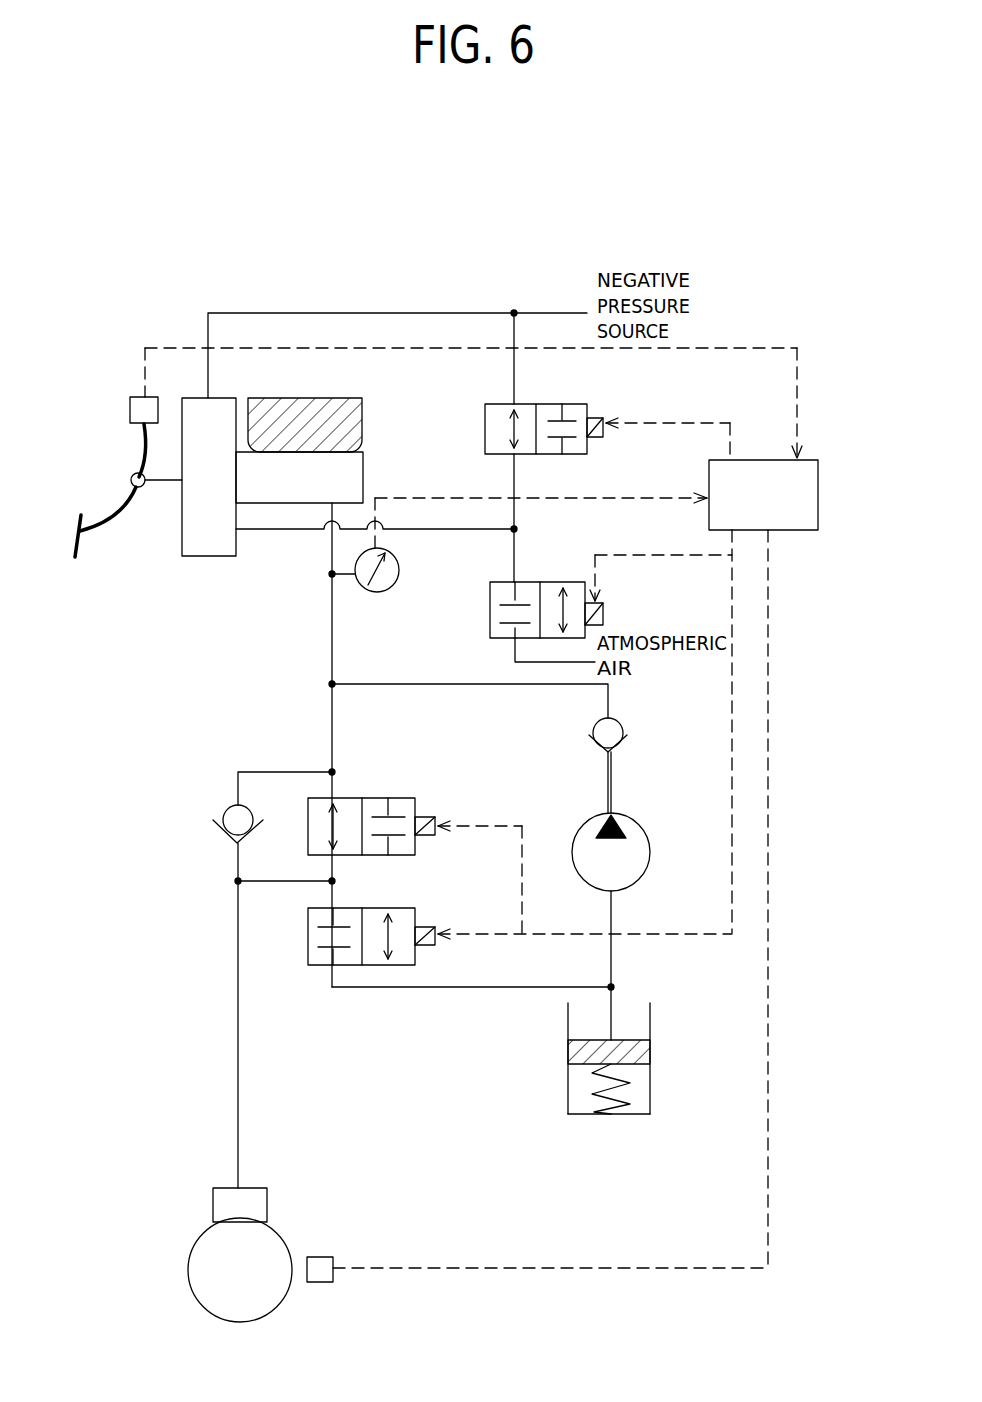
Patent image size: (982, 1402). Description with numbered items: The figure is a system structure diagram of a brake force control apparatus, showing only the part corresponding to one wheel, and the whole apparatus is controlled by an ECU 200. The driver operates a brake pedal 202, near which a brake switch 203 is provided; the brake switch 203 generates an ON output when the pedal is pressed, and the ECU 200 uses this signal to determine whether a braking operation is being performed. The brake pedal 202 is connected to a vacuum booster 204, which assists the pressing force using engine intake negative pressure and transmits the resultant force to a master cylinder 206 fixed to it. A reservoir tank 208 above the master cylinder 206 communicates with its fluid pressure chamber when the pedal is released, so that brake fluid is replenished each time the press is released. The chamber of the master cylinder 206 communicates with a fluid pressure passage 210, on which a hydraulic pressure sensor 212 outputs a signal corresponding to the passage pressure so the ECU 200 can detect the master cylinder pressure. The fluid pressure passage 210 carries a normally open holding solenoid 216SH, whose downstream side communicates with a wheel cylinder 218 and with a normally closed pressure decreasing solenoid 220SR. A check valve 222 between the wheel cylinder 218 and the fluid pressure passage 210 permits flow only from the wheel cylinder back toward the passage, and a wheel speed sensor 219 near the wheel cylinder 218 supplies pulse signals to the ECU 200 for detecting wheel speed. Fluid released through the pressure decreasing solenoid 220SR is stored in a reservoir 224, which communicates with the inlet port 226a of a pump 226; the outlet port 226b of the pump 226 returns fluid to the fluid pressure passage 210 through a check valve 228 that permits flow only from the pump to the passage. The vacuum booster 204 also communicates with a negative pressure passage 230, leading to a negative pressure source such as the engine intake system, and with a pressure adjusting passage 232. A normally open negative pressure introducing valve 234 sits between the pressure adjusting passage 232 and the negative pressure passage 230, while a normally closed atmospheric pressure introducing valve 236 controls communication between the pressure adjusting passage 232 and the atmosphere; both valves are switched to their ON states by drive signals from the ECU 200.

The ECU 200 is at (818, 485).
The brake pedal 202 is at (97, 540).
The brake switch 203 is at (132, 396).
The vacuum booster 204 is at (207, 558).
The master cylinder 206 is at (366, 470).
The reservoir tank 208 is at (370, 406).
The fluid pressure passage 210 is at (332, 596).
The hydraulic pressure sensor 212 is at (400, 568).
The holding solenoid 216SH is at (378, 797).
The wheel cylinder 218 is at (267, 1203).
The wheel speed sensor 219 is at (320, 1256).
The pressure decreasing solenoid 220SR is at (395, 906).
The check valve 222 is at (224, 800).
The reservoir 224 is at (568, 1105).
The pump 226 is at (650, 832).
The inlet port 226a is at (615, 893).
The outlet port 226b is at (612, 810).
The check valve 228 is at (618, 724).
The negative pressure passage 230 is at (413, 313).
The pressure adjusting passage 232 is at (396, 529).
The negative pressure introducing valve 234 is at (570, 406).
The atmospheric pressure introducing valve 236 is at (604, 612).